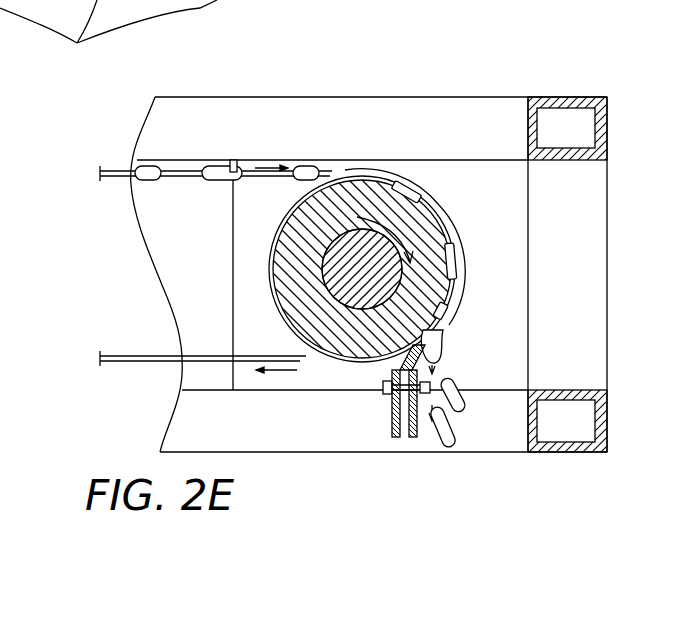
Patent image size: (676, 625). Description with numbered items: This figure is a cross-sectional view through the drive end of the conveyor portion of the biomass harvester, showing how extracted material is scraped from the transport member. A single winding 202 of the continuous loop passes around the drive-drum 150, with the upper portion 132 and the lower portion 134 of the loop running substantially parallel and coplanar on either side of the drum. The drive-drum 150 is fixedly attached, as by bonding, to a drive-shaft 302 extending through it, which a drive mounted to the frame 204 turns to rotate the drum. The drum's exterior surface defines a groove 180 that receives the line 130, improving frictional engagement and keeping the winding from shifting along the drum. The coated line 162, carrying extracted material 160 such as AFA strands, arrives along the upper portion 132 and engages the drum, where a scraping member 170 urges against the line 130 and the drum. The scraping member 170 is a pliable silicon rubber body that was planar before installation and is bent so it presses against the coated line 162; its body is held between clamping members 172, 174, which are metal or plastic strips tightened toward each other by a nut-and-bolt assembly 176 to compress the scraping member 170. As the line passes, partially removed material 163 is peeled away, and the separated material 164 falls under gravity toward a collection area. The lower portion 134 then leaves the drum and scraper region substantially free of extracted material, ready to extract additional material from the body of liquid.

The line 130 is at (453, 197).
The upper portion 132 is at (118, 173).
The lower portion 134 is at (137, 366).
The drive-drum 150 is at (282, 216).
The extracted material 160 is at (233, 160).
The coated line 162 is at (183, 128).
The partially removed material 163 is at (437, 337).
The separated material 164 is at (452, 427).
The scraping member 170 is at (413, 352).
The clamping member 172 is at (392, 413).
The clamping member 174 is at (410, 437).
The nut-and-bolt assembly 176 is at (382, 387).
The groove 180 is at (282, 320).
The single winding 202 is at (108, 37).
The frame 204 is at (557, 70).
The drive-shaft 302 is at (321, 268).